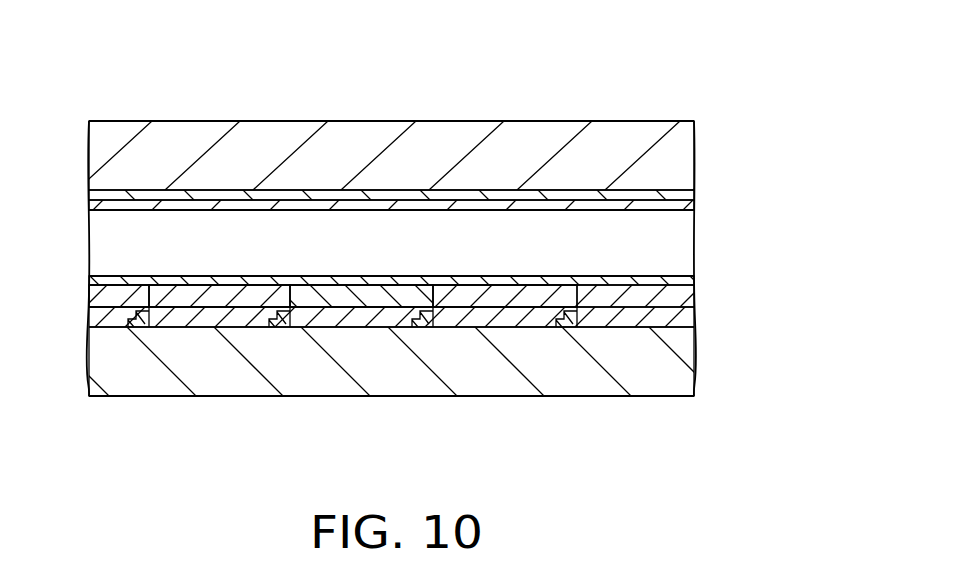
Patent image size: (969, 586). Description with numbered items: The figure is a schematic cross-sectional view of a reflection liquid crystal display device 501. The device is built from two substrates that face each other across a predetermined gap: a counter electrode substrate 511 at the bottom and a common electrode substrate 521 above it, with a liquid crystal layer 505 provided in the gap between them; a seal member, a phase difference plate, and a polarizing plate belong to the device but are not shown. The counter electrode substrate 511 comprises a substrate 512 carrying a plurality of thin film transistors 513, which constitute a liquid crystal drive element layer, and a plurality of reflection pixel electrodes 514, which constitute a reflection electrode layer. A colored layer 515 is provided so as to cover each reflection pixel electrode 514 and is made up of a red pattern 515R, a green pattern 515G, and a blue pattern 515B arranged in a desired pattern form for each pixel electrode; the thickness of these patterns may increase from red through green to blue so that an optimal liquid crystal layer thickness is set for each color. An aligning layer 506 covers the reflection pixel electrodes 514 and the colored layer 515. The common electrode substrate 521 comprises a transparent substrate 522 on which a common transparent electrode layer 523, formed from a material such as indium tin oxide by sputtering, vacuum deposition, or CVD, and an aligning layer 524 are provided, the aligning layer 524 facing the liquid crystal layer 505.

The liquid crystal display device 501 is at (562, 92).
The common electrode substrate 521 is at (720, 105).
The transparent substrate 522 is at (680, 153).
The common transparent electrode layer 523 is at (678, 193).
The aligning layer 524 is at (683, 204).
The liquid crystal layer 505 is at (457, 254).
The aligning layer 506 is at (675, 280).
The colored layer 515 is at (710, 290).
The blue pattern 515B is at (120, 292).
The red pattern 515R is at (197, 293).
The green pattern 515G is at (318, 295).
The reflection pixel electrode 514 is at (680, 318).
The thin film transistor 513 is at (141, 327).
The substrate 512 is at (686, 355).
The counter electrode substrate 511 is at (703, 408).